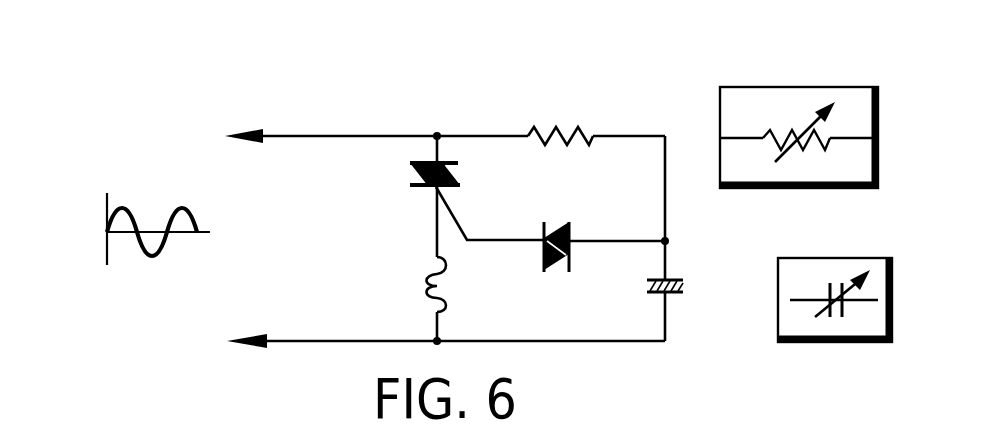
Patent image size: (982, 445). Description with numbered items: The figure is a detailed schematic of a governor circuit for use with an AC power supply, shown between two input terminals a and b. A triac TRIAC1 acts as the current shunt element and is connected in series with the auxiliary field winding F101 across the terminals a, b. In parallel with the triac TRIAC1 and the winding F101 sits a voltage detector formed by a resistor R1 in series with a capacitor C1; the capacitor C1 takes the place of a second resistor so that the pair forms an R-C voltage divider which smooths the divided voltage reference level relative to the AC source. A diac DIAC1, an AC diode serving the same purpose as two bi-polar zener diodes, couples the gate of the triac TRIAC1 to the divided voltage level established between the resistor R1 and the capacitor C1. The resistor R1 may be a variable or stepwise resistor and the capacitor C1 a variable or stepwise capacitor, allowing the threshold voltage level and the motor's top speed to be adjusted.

The input terminal a is at (207, 135).
The input terminal b is at (204, 339).
The triac TRIAC1 is at (382, 175).
The resistor R1 is at (712, 183).
The diac DIAC1 is at (564, 266).
The auxiliary field winding F101 is at (395, 284).
The capacitor C1 is at (773, 337).